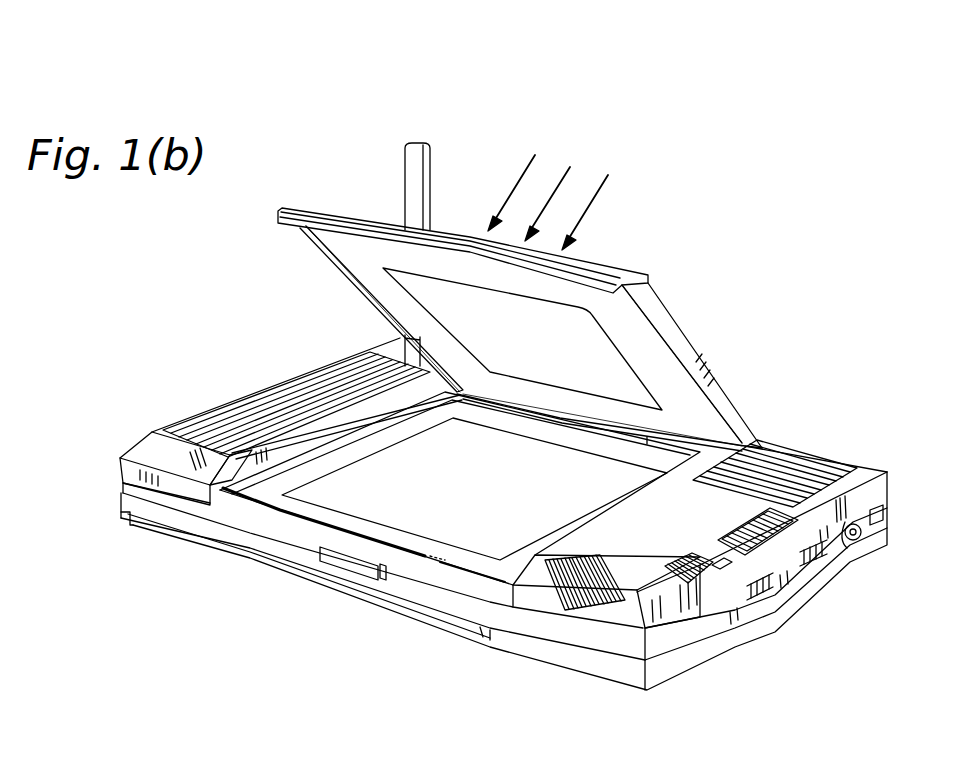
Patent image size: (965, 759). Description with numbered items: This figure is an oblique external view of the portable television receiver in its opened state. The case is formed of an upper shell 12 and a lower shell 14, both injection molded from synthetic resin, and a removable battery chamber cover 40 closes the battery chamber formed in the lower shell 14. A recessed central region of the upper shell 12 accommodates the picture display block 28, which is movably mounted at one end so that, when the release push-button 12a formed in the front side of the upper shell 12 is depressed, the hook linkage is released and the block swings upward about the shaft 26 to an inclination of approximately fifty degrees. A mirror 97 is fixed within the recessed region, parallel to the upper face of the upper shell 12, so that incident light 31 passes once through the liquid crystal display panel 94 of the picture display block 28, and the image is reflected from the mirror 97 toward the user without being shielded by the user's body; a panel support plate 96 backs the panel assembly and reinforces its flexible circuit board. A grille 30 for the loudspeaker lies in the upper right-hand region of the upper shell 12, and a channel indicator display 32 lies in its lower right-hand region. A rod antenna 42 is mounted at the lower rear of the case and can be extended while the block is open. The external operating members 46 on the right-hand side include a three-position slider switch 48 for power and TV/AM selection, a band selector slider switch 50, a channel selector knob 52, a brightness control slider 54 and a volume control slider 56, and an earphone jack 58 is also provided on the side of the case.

The upper shell 12 is at (142, 453).
The release push-button 12a is at (340, 567).
The lower shell 14 is at (593, 657).
The shaft 26 is at (884, 508).
The picture display block 28 is at (722, 369).
The grille 30 is at (813, 460).
The incident light 31 is at (565, 202).
The channel indicator display 32 is at (593, 532).
The battery chamber cover 40 is at (155, 525).
The rod antenna 42 is at (422, 168).
The external operating members 46 is at (673, 562).
The 3-position slider switch 48 is at (750, 520).
The band selector slider switch 50 is at (547, 600).
The channel selector knob 52 is at (720, 568).
The brightness control slider 54 is at (767, 587).
The volume control slider 56 is at (820, 553).
The earphone jack 58 is at (868, 538).
The liquid crystal display panel 94 is at (450, 317).
The panel support plate 96 is at (350, 262).
The mirror 97 is at (247, 545).